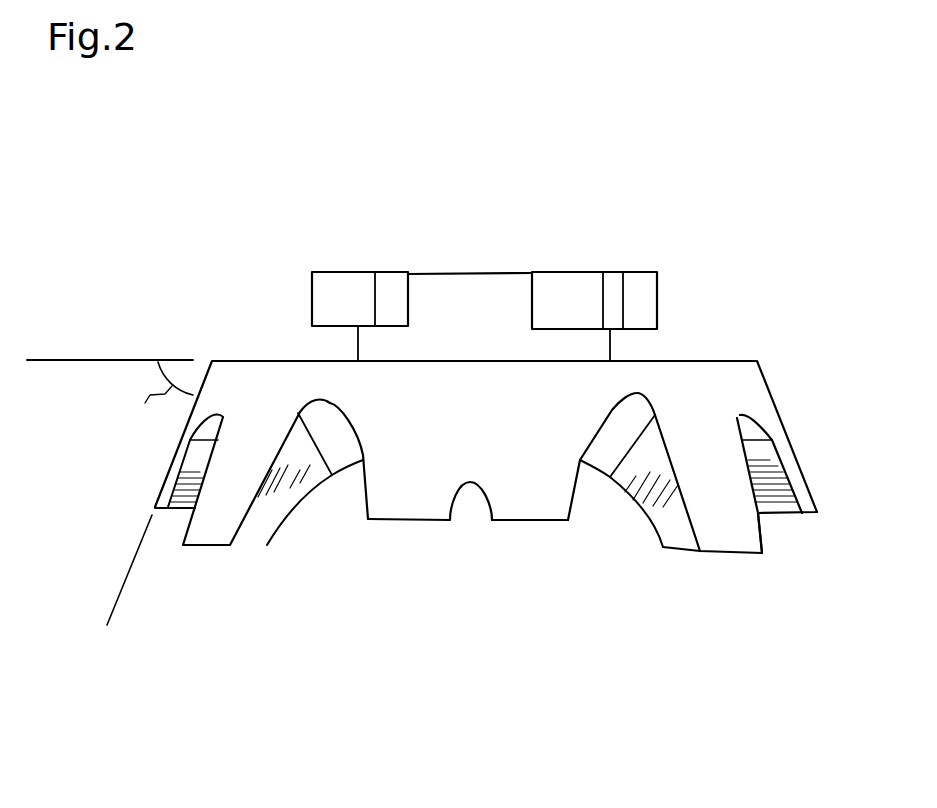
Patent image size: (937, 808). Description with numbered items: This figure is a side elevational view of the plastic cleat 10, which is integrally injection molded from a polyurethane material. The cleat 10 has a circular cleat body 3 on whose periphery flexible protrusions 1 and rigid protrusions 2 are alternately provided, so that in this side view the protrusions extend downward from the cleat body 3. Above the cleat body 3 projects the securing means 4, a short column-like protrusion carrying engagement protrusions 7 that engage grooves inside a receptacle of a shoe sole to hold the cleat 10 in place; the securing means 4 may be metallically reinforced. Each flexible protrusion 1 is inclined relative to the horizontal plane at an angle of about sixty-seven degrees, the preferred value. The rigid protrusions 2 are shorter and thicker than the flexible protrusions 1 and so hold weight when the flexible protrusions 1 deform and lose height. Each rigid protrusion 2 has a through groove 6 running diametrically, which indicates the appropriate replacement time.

The cleat 10 is at (472, 253).
The engagement protrusion 7 is at (350, 290).
The securing means 4 is at (462, 302).
The cleat body 3 is at (727, 390).
The flexible protrusion 1 is at (732, 517).
The rigid protrusion 2 is at (525, 487).
The through groove 6 is at (458, 503).